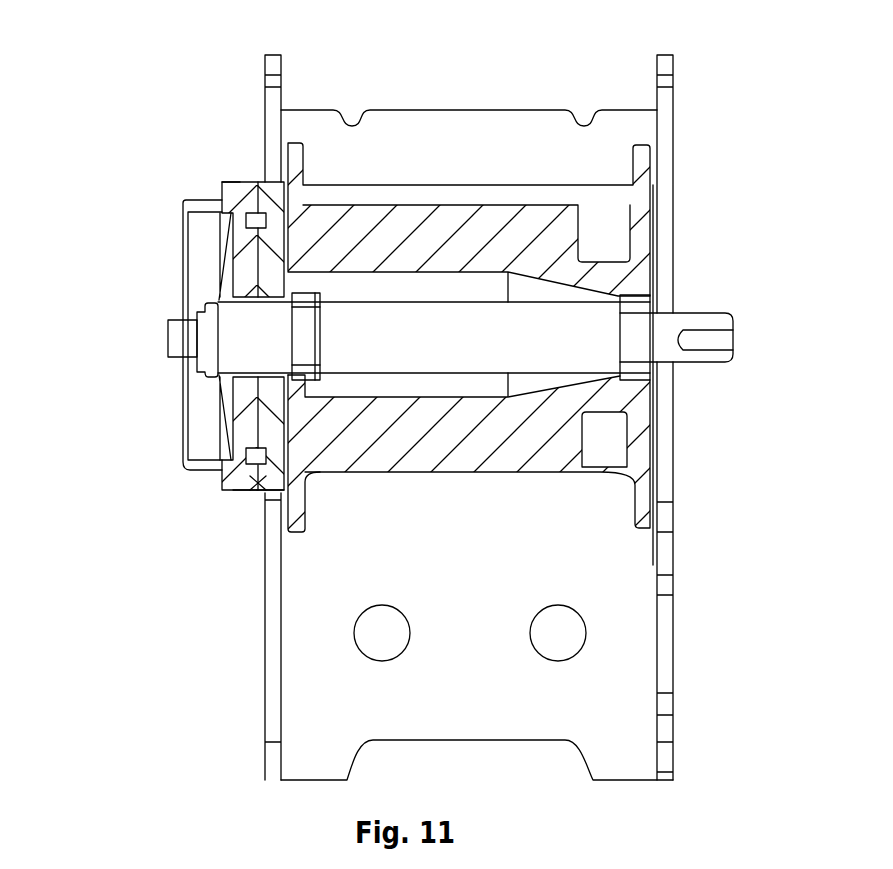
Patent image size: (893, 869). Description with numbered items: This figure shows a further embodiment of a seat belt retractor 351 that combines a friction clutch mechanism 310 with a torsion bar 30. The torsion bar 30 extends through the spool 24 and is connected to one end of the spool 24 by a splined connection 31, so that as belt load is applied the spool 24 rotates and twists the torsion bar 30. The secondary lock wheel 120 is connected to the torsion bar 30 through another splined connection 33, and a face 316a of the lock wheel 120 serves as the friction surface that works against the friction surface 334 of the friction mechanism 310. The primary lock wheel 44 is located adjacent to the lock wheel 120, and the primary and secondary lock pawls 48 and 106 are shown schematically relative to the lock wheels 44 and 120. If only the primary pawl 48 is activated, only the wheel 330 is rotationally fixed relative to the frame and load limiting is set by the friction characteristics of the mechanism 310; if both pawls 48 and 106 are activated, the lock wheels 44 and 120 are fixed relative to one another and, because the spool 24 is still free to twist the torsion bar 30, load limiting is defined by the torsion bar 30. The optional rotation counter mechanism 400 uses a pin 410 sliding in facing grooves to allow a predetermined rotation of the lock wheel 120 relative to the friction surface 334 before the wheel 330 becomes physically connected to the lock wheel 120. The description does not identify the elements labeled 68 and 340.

The spool 24 is at (398, 228).
The torsion bar 30 is at (440, 328).
The splined connection 31 is at (630, 338).
The splined connection 33 is at (306, 333).
The lock wheel 44 is at (250, 495).
The lock pawl 48 is at (235, 176).
The slot 68 is at (733, 337).
The lock pawl 106 is at (262, 176).
The secondary lock wheel 120 is at (258, 503).
The friction clutch mechanism 310 is at (254, 388).
The face of the lock wheel 316a is at (250, 256).
The wheel 330 is at (231, 197).
The friction surface 334 is at (246, 253).
The lower cap portion 340 is at (227, 425).
The retractor 351 is at (148, 262).
The torsion bar rotation counter mechanism 400 is at (245, 485).
The pin 410 is at (310, 474).